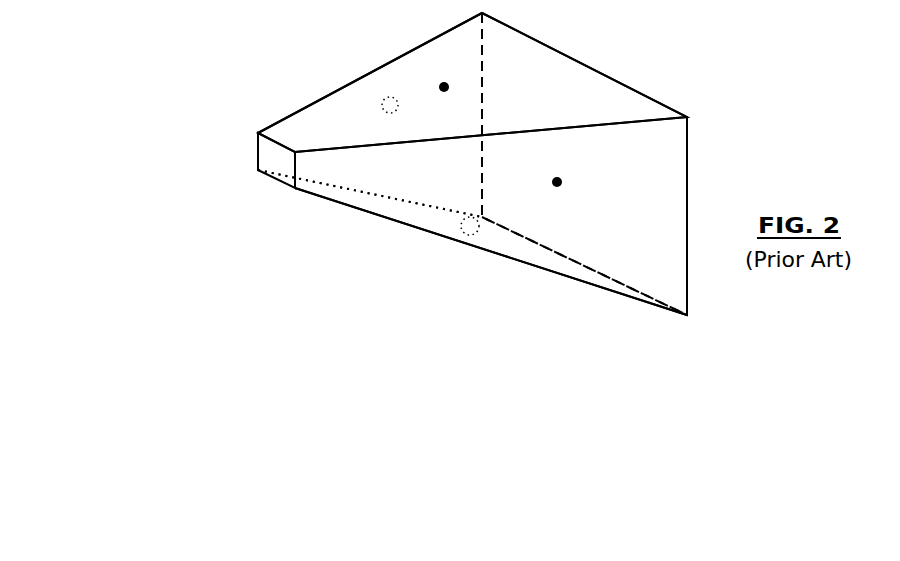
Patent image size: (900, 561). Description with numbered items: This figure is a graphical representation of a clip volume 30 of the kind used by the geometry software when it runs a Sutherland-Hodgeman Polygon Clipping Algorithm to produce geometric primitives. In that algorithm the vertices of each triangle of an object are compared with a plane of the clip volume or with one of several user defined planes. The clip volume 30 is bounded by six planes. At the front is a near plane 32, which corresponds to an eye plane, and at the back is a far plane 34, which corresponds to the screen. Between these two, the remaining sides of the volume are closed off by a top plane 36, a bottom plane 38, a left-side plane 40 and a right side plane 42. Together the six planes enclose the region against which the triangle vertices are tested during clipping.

The view frustum 30 is at (179, 246).
The near plane 32 is at (256, 152).
The far plane 34 is at (617, 73).
The top plane 36 is at (438, 76).
The bottom plane 38 is at (456, 229).
The left-side plane 40 is at (375, 107).
The right side plane 42 is at (558, 192).